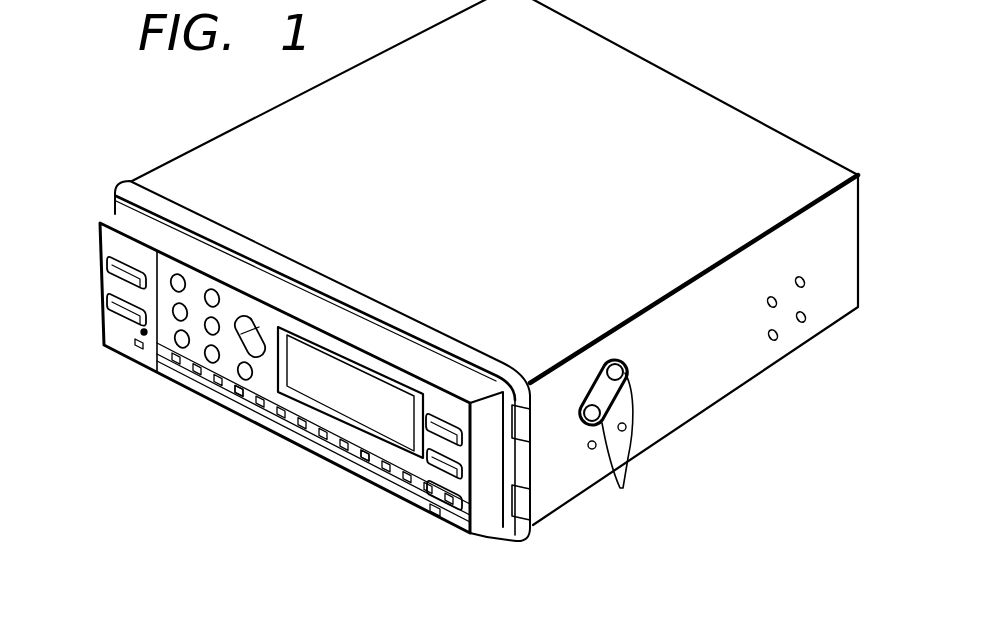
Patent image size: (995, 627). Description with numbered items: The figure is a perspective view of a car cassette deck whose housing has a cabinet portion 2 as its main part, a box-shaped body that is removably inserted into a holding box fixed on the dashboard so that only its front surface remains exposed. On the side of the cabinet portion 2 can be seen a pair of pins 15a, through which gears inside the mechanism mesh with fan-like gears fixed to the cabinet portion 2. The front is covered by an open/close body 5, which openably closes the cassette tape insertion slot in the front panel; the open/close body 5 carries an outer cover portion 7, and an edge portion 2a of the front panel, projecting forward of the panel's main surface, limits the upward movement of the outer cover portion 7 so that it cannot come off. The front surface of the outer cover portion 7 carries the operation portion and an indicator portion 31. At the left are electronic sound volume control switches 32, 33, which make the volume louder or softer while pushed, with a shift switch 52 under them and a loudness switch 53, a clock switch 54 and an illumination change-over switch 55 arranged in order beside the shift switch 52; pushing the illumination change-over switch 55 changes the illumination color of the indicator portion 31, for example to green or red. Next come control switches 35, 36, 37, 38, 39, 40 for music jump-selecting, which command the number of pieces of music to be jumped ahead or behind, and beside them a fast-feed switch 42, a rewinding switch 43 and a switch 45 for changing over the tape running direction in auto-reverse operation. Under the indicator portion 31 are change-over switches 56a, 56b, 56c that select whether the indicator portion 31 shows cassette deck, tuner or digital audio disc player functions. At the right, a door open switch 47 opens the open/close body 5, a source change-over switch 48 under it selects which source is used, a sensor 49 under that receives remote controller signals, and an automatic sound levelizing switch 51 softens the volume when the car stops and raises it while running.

The cabinet portion 2 is at (712, 96).
The edge portion 2a is at (176, 208).
The open/close body 5 is at (94, 244).
The outer cover portion 7 is at (115, 222).
The pins 15a is at (624, 489).
The indicator portion 31 is at (373, 387).
The electronic sound volume control switch 32 is at (109, 268).
The electronic sound volume control switch 33 is at (109, 314).
The control switch 35 is at (182, 272).
The control switch 36 is at (188, 305).
The control switch 37 is at (216, 290).
The control switch 38 is at (219, 318).
The control switch 39 is at (175, 344).
The control switch 40 is at (210, 363).
The fast-feed switch 42 is at (255, 316).
The rewinding switch 43 is at (262, 333).
The switch for changing over the tape running direction 45 is at (250, 380).
The door open switch 47 is at (440, 420).
The source change-over switch 48 is at (438, 472).
The sensor 49 is at (452, 511).
The automatic sound levelizing switch 51 is at (436, 514).
The shift switch 52 is at (136, 347).
The loudness switch 53 is at (195, 368).
The clock switch 54 is at (217, 385).
The illumination change-over switch 55 is at (239, 397).
The change-over switch 56a is at (320, 440).
The change-over switch 56b is at (360, 460).
The change-over switch 56c is at (385, 472).